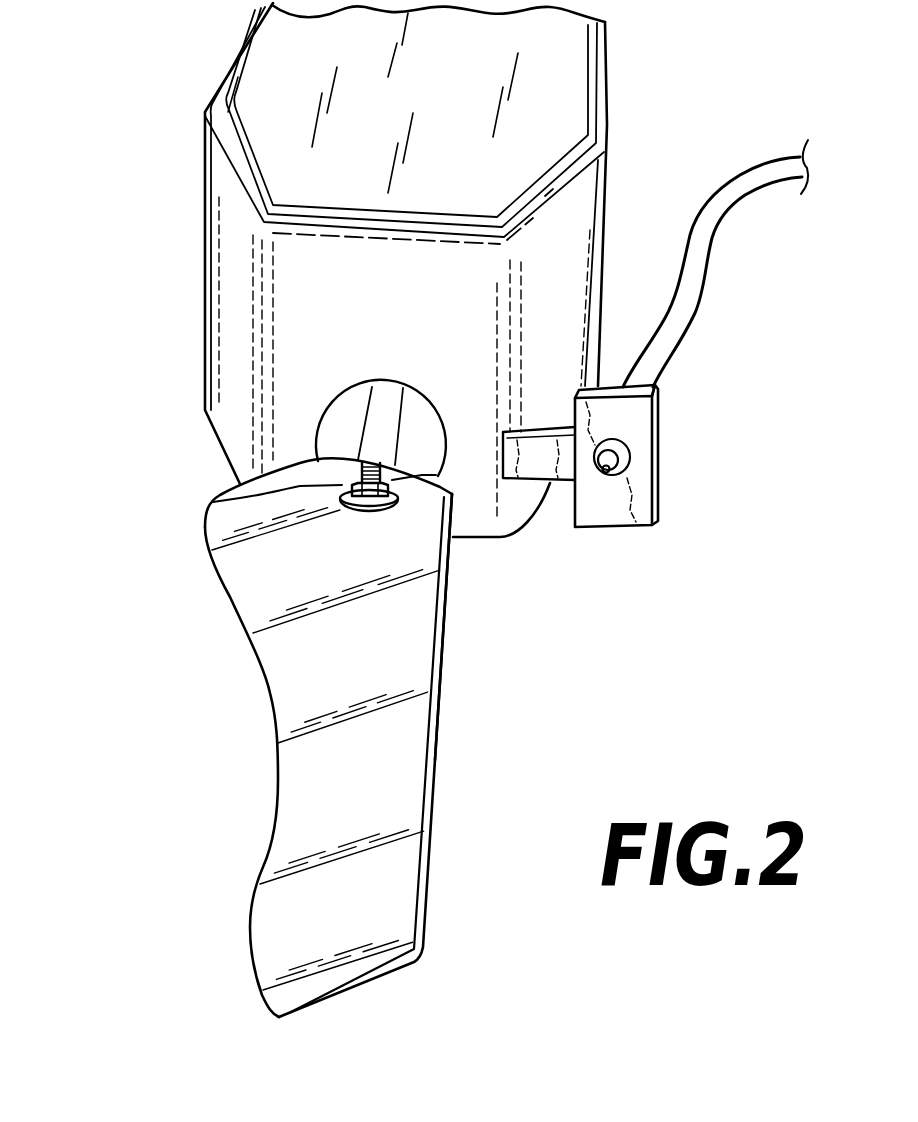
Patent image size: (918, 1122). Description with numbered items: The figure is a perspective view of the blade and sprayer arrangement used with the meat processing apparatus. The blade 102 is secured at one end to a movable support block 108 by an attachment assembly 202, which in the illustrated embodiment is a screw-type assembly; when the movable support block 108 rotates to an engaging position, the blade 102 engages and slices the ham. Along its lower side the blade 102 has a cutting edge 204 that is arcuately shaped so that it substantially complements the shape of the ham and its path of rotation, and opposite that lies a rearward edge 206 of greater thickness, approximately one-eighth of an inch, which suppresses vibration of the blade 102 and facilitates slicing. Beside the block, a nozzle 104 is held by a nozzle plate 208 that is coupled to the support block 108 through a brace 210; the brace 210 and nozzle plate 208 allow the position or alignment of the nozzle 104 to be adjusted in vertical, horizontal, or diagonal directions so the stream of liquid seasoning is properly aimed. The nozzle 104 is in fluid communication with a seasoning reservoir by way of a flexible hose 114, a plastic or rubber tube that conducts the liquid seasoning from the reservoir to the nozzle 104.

The blade 102 is at (323, 928).
The nozzle 104 is at (623, 478).
The movable support block 108 is at (237, 263).
The flexible hose 114 is at (692, 263).
The attachment assembly 202 is at (213, 502).
The cutting edge 204 is at (263, 692).
The rearward edge 206 is at (437, 743).
The nozzle plate 208 is at (627, 510).
The brace 210 is at (533, 457).